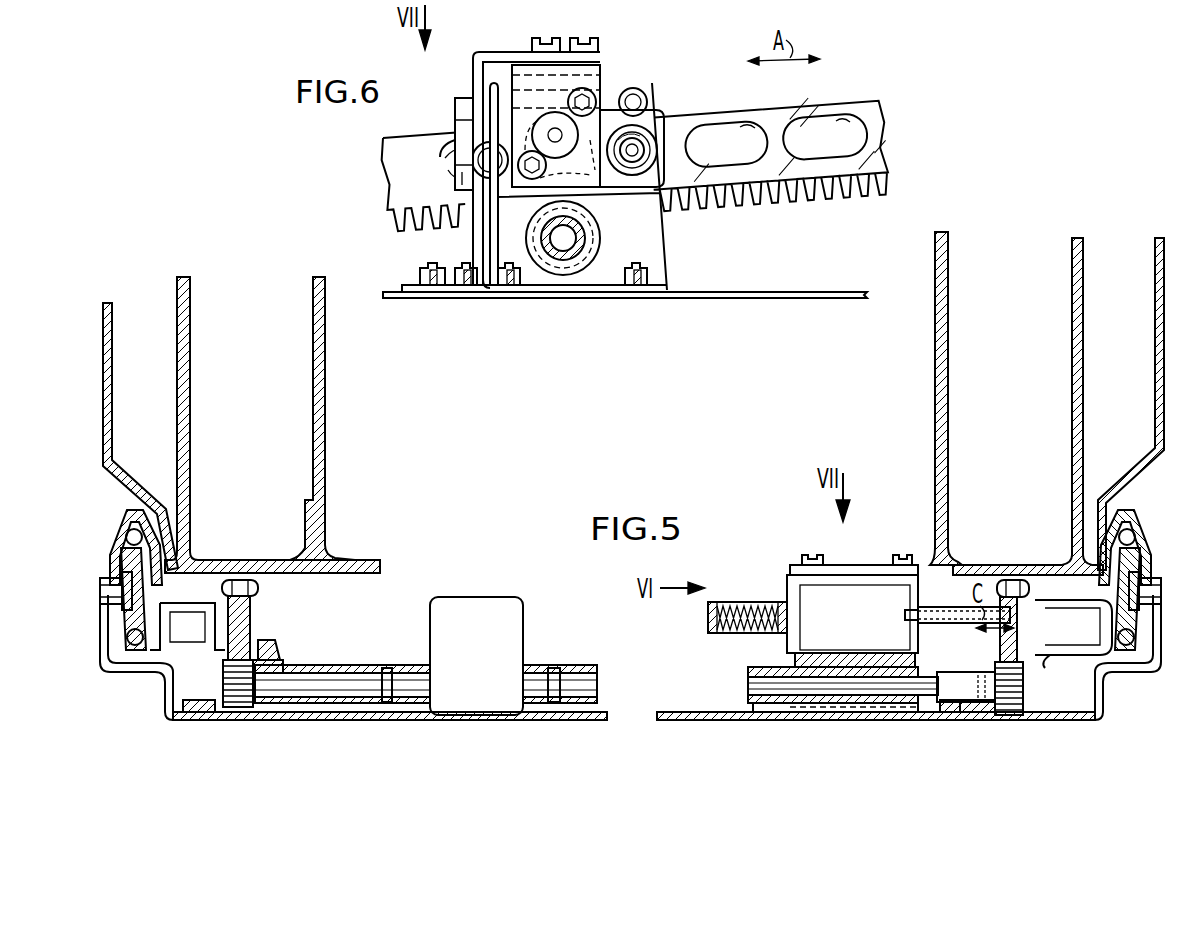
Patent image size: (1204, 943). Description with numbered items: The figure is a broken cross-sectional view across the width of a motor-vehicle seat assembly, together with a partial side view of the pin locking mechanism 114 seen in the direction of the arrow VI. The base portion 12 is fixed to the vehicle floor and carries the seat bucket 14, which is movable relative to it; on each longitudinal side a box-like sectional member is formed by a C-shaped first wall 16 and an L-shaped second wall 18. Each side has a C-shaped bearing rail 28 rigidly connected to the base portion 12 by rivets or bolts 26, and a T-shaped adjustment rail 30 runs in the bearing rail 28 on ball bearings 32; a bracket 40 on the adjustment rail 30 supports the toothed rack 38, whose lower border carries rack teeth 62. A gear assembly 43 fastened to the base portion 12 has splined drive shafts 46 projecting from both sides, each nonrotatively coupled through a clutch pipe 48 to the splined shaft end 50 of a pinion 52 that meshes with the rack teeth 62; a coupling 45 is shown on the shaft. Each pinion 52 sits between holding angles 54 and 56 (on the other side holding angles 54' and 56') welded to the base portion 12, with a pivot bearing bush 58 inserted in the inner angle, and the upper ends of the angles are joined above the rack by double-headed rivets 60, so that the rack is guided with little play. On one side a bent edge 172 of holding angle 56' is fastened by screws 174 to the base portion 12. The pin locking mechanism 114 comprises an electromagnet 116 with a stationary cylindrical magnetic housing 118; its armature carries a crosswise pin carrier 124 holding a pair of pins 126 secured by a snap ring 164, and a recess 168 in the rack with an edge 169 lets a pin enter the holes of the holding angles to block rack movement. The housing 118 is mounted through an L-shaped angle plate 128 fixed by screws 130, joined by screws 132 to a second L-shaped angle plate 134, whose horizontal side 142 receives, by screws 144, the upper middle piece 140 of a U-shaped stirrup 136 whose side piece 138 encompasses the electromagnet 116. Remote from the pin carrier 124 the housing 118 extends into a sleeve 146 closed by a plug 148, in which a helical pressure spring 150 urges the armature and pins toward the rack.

In FIG. 6, the base portion 12 is at (742, 296).
In FIG. 5, the base portion 12 is at (137, 675).
In FIG. 5, the seat bucket 14 is at (114, 484).
In FIG. 5, the first wall 16 is at (190, 416).
In FIG. 5, the second wall 18 is at (325, 416).
In FIG. 5, the rivets or bolts 26 is at (112, 603).
In FIG. 5, the bearing rail 28 is at (160, 648).
In FIG. 5, the adjustment rail 30 is at (163, 603).
In FIG. 5, the ball bearings 32 is at (163, 512).
In FIG. 6, the toothed rack 38 is at (775, 200).
In FIG. 5, the toothed rack 38 is at (250, 650).
In FIG. 5, the bracket 40 is at (213, 636).
In FIG. 5, the gear assembly 43 is at (488, 606).
In FIG. 5, the coupling collar 45 is at (389, 668).
In FIG. 5, the splined drive shafts 46 is at (557, 670).
In FIG. 6, the clutch pipe 48 is at (603, 240).
In FIG. 5, the clutch pipe 48 is at (360, 665).
In FIG. 5, the splined shaft end 50 is at (335, 718).
In FIG. 6, the pinion 52 is at (590, 285).
In FIG. 5, the pinion 52 is at (245, 716).
In FIG. 5, the holding angle 54 is at (195, 727).
In FIG. 5, the holding angle 54' is at (1070, 643).
In FIG. 5, the inner holding angle 56 is at (292, 639).
In FIG. 6, the holding angle 56' is at (700, 249).
In FIG. 5, the holding angle 56' is at (1002, 550).
In FIG. 6, the pivot bearing bush 58 is at (588, 228).
In FIG. 5, the pivot bearing bush 58 is at (282, 663).
In FIG. 6, the double-headed rivets 60 is at (648, 90).
In FIG. 5, the double-headed rivets 60 is at (260, 590).
In FIG. 6, the rack teeth 62 is at (815, 200).
In FIG. 6, the pin locking mechanism 114 is at (443, 112).
In FIG. 5, the pin locking mechanism 114 is at (787, 570).
In FIG. 6, the electromagnet 116 is at (652, 85).
In FIG. 5, the electromagnet 116 is at (857, 600).
In FIG. 6, the magnetic housing 118 is at (653, 86).
In FIG. 5, the magnetic housing 118 is at (858, 601).
In FIG. 6, the pin carrier 124 is at (662, 228).
In FIG. 6, the pins 126 is at (445, 163).
In FIG. 5, the pins 126 is at (905, 622).
In FIG. 6, the L-shaped angle plate 128 is at (485, 245).
In FIG. 5, the L-shaped angle plate 128 is at (787, 712).
In FIG. 6, the screws 130 is at (437, 264).
In FIG. 6, the screws 132 is at (455, 98).
In FIG. 6, the second L-shaped angle plate 134 is at (497, 53).
In FIG. 6, the U-shaped stirrup 136 is at (602, 58).
In FIG. 6, the side piece 138 is at (614, 71).
In FIG. 5, the side piece 138 is at (790, 638).
In FIG. 6, the upper middle piece 140 is at (521, 70).
In FIG. 5, the upper middle piece 140 is at (833, 575).
In FIG. 6, the horizontal side 142 is at (590, 52).
In FIG. 5, the horizontal side 142 is at (848, 567).
In FIG. 6, the screws 144 is at (557, 48).
In FIG. 5, the screws 144 is at (815, 556).
In FIG. 5, the sleeve 146 is at (730, 602).
In FIG. 5, the plug 148 is at (708, 622).
In FIG. 5, the helical pressure spring 150 is at (757, 603).
In FIG. 6, the snap ring 164 is at (675, 128).
In FIG. 6, the recess 168 is at (763, 120).
In FIG. 6, the slot edge 169 is at (829, 120).
In FIG. 6, the bent edge 172 is at (647, 287).
In FIG. 5, the bent edge 172 is at (966, 687).
In FIG. 6, the screws 174 is at (510, 266).
In FIG. 5, the screws 174 is at (952, 700).